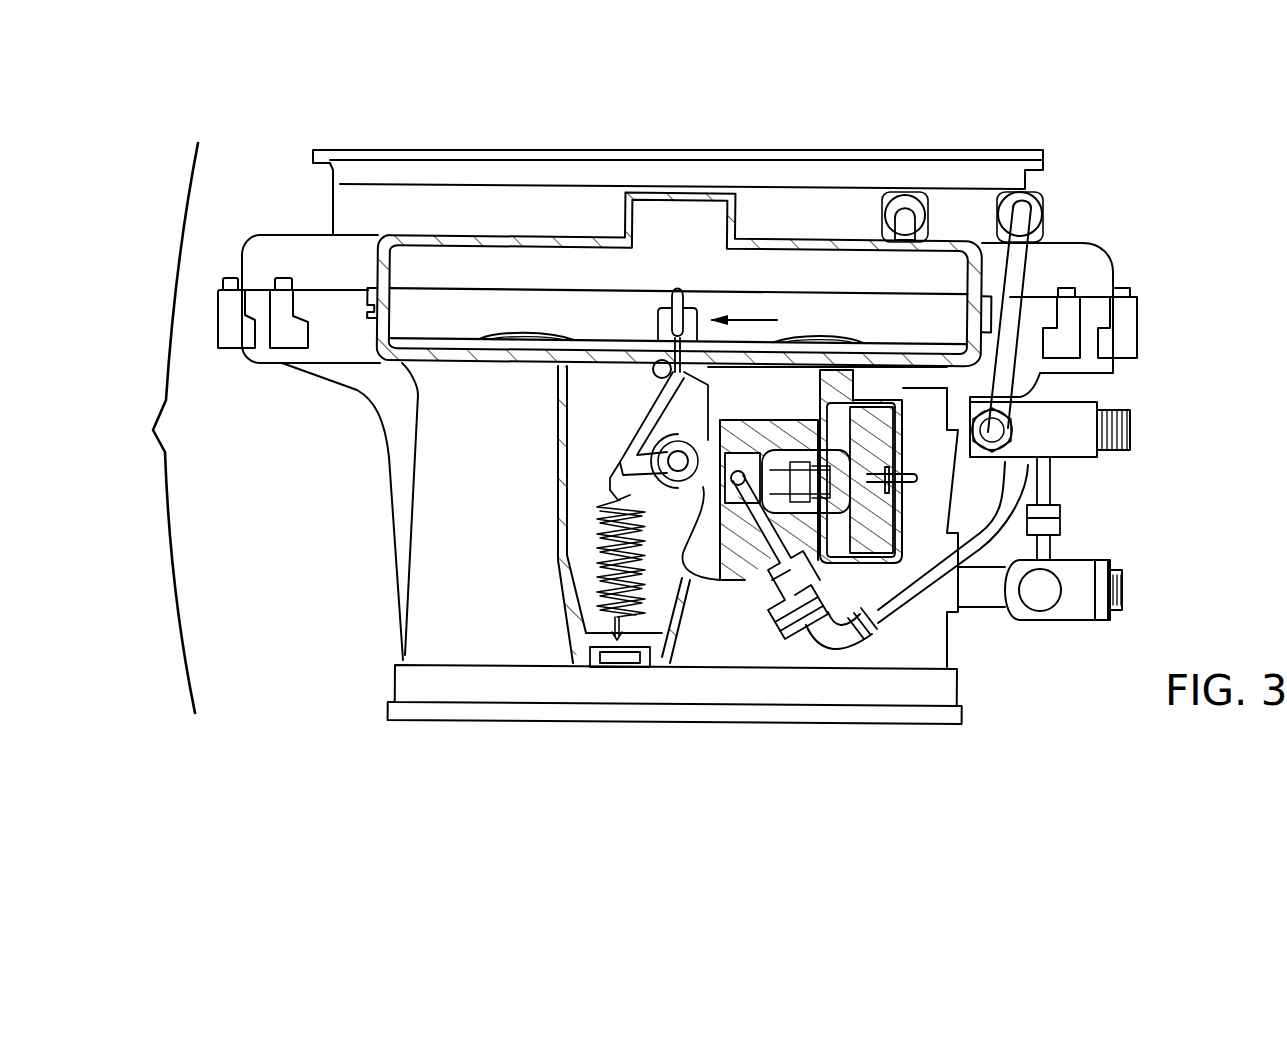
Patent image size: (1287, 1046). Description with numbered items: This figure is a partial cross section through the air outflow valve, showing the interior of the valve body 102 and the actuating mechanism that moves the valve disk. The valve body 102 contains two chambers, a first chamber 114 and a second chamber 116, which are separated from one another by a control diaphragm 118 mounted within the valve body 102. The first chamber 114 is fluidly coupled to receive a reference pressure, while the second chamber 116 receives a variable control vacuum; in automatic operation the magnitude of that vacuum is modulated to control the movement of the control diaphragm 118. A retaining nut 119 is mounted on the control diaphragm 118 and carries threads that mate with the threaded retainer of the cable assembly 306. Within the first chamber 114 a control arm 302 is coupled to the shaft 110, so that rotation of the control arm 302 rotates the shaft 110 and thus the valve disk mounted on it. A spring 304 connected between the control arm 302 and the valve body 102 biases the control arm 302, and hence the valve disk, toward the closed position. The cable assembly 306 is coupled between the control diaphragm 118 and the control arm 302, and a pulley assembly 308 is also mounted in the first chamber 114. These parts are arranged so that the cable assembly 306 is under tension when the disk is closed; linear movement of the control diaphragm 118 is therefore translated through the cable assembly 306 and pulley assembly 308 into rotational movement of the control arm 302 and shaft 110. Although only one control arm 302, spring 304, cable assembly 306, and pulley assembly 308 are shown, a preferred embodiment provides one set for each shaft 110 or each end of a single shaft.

The valve body 102 is at (146, 428).
The shaft 110 is at (693, 581).
The first chamber 114 is at (575, 482).
The second chamber 116 is at (780, 265).
The control diaphragm 118 is at (532, 332).
The retaining nut 119 is at (670, 307).
The control arm 302 is at (607, 472).
The spring 304 is at (592, 558).
The cable assembly 306 is at (769, 318).
The pulley assembly 308 is at (692, 388).